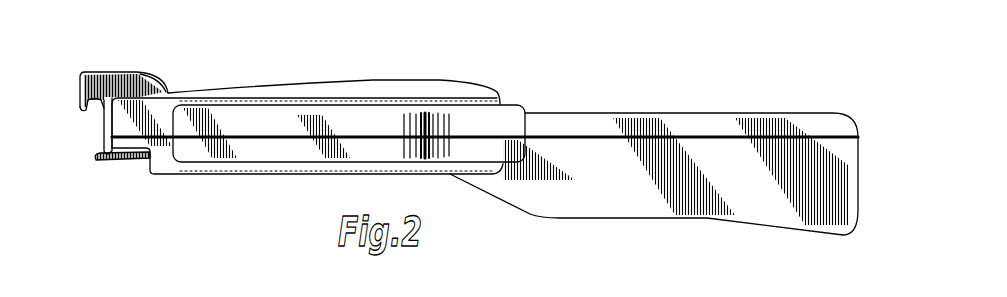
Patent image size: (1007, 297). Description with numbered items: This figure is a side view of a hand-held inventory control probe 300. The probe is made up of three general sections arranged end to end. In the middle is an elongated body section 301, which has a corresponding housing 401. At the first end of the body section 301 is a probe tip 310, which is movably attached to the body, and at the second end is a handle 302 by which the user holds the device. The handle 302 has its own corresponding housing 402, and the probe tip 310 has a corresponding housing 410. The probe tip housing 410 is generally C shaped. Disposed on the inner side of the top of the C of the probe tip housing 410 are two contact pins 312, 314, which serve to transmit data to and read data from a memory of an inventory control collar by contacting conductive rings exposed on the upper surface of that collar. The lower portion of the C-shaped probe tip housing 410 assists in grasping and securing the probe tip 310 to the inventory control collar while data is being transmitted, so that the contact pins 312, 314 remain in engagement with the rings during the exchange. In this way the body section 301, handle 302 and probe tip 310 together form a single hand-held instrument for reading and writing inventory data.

The hand-held inventory control probe 300 is at (506, 82).
The elongated body section 301 is at (371, 76).
The handle 302 is at (700, 108).
The probe tip 310 is at (117, 63).
The contact pin 312 is at (103, 126).
The contact pin 314 is at (84, 112).
The body section housing 401 is at (384, 130).
The handle housing 402 is at (624, 190).
The probe tip housing 410 is at (138, 82).